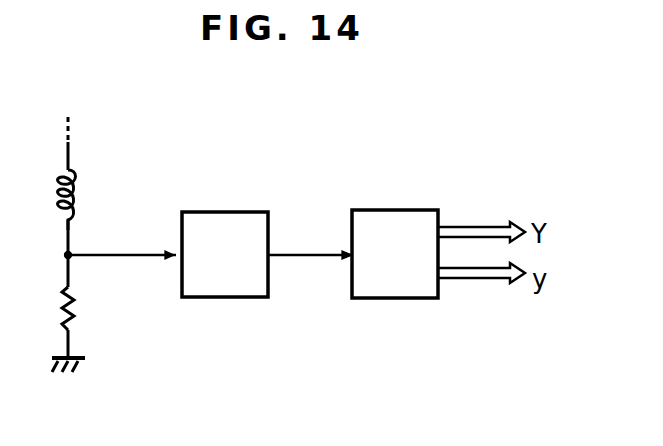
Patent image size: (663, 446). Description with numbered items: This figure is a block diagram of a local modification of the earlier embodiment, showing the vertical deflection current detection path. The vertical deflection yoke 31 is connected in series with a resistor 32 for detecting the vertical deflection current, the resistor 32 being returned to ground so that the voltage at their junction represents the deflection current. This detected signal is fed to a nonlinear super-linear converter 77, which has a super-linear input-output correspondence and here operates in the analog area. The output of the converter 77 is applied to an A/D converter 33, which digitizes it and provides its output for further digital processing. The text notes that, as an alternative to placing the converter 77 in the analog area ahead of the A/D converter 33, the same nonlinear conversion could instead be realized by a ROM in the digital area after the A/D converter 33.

The vertical deflection yoke 31 is at (80, 198).
The resistor for detecting a vertical deflection current 32 is at (80, 302).
The nonlinear super-linear converter 77 is at (225, 210).
The A/D converter 33 is at (395, 208).